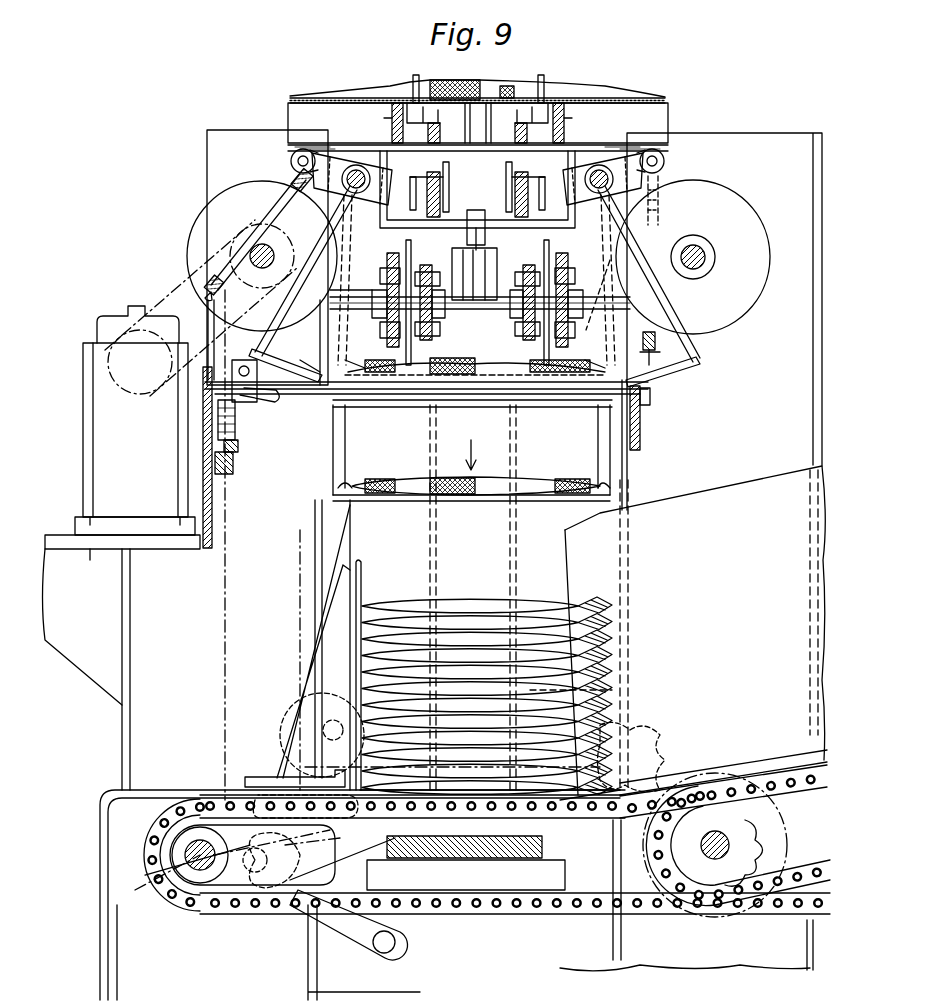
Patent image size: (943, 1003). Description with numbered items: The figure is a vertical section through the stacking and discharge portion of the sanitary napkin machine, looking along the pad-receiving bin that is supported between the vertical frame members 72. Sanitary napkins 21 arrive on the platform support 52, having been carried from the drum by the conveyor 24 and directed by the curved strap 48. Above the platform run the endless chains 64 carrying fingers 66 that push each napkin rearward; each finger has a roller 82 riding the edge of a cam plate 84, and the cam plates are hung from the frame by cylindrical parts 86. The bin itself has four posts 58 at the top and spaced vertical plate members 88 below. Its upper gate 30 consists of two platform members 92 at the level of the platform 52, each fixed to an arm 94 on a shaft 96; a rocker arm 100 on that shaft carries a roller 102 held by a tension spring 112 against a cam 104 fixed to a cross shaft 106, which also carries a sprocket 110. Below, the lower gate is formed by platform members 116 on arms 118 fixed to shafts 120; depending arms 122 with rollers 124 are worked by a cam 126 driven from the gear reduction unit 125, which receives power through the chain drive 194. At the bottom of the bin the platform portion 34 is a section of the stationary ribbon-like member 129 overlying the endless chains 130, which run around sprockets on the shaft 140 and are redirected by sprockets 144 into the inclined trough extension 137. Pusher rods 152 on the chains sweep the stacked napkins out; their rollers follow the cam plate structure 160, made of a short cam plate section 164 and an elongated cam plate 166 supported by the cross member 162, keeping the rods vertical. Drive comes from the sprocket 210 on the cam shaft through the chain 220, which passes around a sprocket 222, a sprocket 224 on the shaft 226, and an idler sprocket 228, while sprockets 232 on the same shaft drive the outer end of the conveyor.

The sanitary napkin 21 is at (470, 86).
The conveyor 24 is at (447, 128).
The upper movable platform or gate 30 is at (280, 365).
The platform portion 34 is at (472, 792).
The curved strap 48 is at (505, 348).
The platform support 52 is at (467, 388).
The posts 58 is at (500, 505).
The endless chains 64 is at (380, 276).
The fingers 66 is at (544, 246).
The vertical frame members 72 is at (207, 177).
The roller 82 is at (427, 264).
The cam plate 84 is at (418, 318).
The cylindrical parts 86 is at (497, 258).
The vertical plate members 88 is at (360, 310).
The platform members 92 is at (290, 368).
The arm 94 is at (283, 240).
The shaft 96 is at (372, 164).
The rocker arm 100 is at (335, 158).
The roller 102 is at (666, 163).
The cam 104 is at (186, 244).
The cross shaft 106 is at (270, 250).
The sprocket 110 is at (646, 366).
The tension spring 112 is at (660, 206).
The platform members 116 is at (533, 498).
The arms 118 is at (603, 437).
The shaft 120 is at (534, 407).
The depending arms 122 is at (246, 428).
The roller 124 is at (232, 462).
The gear reduction unit 125 is at (152, 487).
The cam 126 is at (228, 494).
The stationary ribbon-like member 129 is at (798, 764).
The endless chains 130 is at (192, 902).
The trough extension 137 is at (740, 619).
The shaft 140 is at (360, 895).
The sprockets 144 is at (655, 735).
The pusher rods 152 is at (362, 577).
The cam plate structure 160 is at (610, 850).
The cross member 162 is at (613, 847).
The short cam plate section 164 is at (350, 862).
The elongated cam plate 166 is at (815, 792).
The chain drive 194 is at (598, 235).
The sprocket 210 is at (240, 240).
The chain 220 is at (225, 664).
The sprocket 222 is at (290, 847).
The sprocket 224 is at (786, 830).
The shaft 226 is at (702, 860).
The idler sprocket 228 is at (290, 748).
The sprockets 232 is at (785, 866).